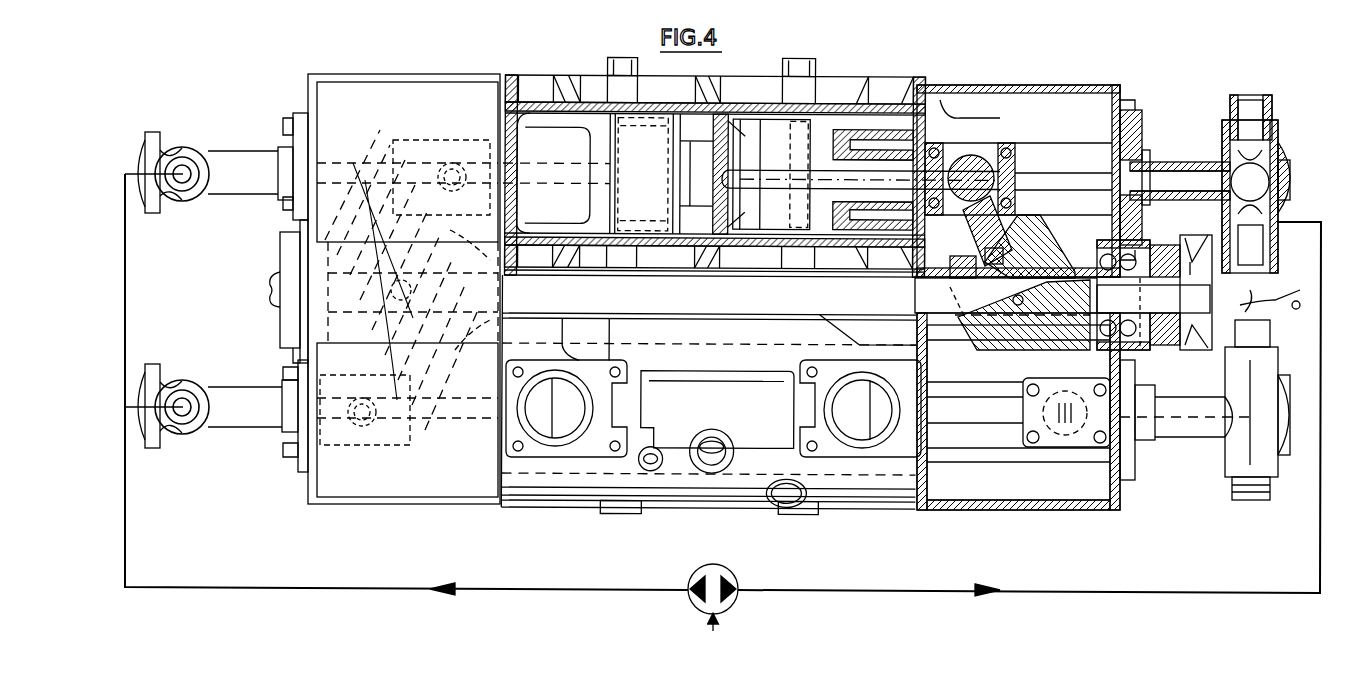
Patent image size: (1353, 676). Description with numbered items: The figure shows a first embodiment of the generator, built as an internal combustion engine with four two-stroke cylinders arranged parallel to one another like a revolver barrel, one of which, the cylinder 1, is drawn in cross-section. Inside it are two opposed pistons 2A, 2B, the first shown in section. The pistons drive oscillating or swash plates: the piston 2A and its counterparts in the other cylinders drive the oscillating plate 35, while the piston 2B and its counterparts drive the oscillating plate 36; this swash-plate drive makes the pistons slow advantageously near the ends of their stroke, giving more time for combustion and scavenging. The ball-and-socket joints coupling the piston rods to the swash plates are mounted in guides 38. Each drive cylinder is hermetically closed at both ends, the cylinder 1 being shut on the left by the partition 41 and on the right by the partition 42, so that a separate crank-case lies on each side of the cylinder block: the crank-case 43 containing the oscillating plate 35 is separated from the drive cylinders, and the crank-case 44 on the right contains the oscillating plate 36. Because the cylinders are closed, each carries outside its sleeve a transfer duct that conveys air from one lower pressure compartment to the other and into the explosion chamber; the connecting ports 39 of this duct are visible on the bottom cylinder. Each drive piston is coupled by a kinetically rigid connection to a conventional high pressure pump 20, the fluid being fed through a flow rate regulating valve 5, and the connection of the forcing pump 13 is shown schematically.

The cylinder 1 is at (740, 95).
The piston 2A is at (597, 135).
The piston 2B is at (822, 140).
The flow rate regulating valve 5 is at (1298, 302).
The forcing pump 13 is at (700, 574).
The high pressure pump 20 is at (184, 147).
The oscillating plate 35 is at (390, 212).
The oscillating plate 36 is at (1037, 228).
The guides 38 is at (985, 150).
The connecting ports of the transfer duct 39 is at (560, 432).
The partition 41 is at (498, 112).
The partition 42 is at (942, 112).
The crank-case 43 is at (415, 485).
The crank-case 44 is at (1022, 493).